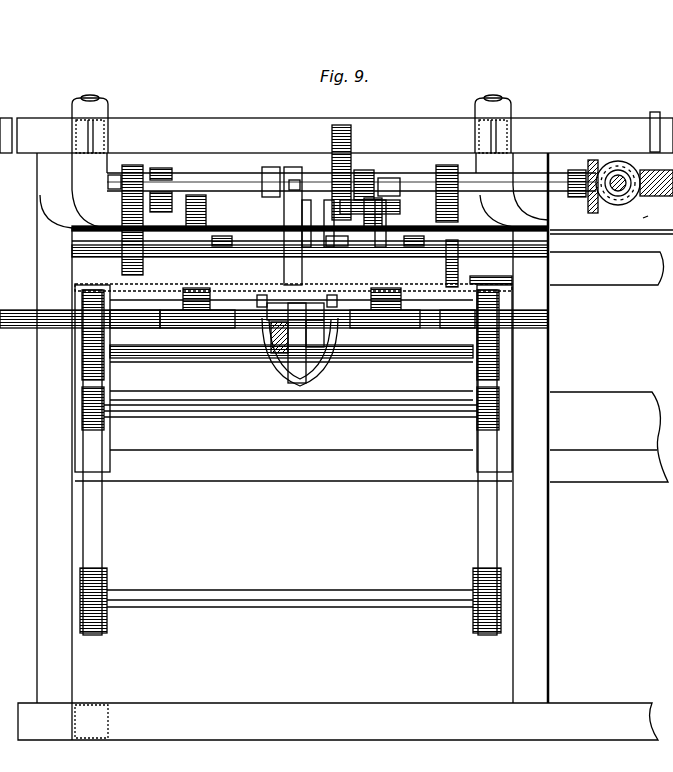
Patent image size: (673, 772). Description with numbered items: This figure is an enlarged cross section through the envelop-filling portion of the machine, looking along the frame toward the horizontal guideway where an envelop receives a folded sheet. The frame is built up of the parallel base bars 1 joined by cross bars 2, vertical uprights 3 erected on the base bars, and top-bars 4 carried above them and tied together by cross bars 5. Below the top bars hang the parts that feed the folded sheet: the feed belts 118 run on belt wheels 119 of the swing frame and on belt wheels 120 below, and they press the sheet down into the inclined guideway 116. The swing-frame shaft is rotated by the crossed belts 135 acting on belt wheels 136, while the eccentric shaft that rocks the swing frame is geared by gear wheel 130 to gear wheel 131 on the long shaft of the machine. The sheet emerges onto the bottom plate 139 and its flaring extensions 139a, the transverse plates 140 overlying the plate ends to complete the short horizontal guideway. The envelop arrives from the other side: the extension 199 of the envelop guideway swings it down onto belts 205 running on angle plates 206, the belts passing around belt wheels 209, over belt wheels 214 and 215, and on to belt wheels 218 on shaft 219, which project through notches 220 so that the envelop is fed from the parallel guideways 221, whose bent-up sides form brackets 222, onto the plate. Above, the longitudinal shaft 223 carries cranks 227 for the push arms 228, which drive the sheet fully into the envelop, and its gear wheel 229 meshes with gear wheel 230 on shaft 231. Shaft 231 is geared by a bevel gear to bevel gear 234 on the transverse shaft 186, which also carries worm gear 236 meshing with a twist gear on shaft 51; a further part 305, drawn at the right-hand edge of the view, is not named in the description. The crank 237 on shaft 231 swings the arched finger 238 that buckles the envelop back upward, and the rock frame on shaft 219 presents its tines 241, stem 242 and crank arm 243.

The base bars 1 is at (294, 712).
The cross bars 2 is at (95, 705).
The vertical uprights 3 is at (38, 605).
The top-bars 4 is at (50, 120).
The cross bars 5 is at (106, 130).
The shaft 51 is at (657, 112).
The guideway 116 is at (184, 298).
The feed belts 118 is at (133, 166).
The belt wheels 119 is at (118, 167).
The belt wheels 120 is at (72, 232).
The gear wheel 130 is at (45, 318).
The gear wheel 131 is at (339, 246).
The crossed belts 135 is at (162, 168).
The belt wheels 136 is at (172, 168).
The bottom plate 139 is at (310, 260).
The flaring extensions 139a is at (200, 303).
The transverse plates 140 is at (80, 286).
The transverse shaft 186 is at (613, 195).
The extension 199 is at (609, 437).
The belts 205 is at (103, 540).
The angle plates 206 is at (113, 438).
The belt wheels 209 is at (107, 630).
The belt wheels 214 is at (85, 380).
The belt wheels 215 is at (100, 432).
The belt wheels 218 is at (80, 330).
The shaft 219 is at (152, 359).
The notches 220 is at (224, 246).
The guideways 221 is at (452, 333).
The brackets 222 is at (545, 263).
The longitudinal shaft 223 is at (243, 213).
The cranks 227 is at (178, 228).
The push arms 228 is at (512, 190).
The gear wheel 229 is at (352, 207).
The gear wheel 230 is at (338, 128).
The shaft 231 is at (364, 172).
The bevel gear 234 is at (610, 170).
The worm gear 236 is at (292, 180).
The crank 237 is at (290, 166).
The arched finger 238 is at (596, 158).
The tines 241 is at (270, 332).
The stem 242 is at (296, 384).
The crank arm 243 is at (308, 373).
The shaft 305 is at (658, 215).